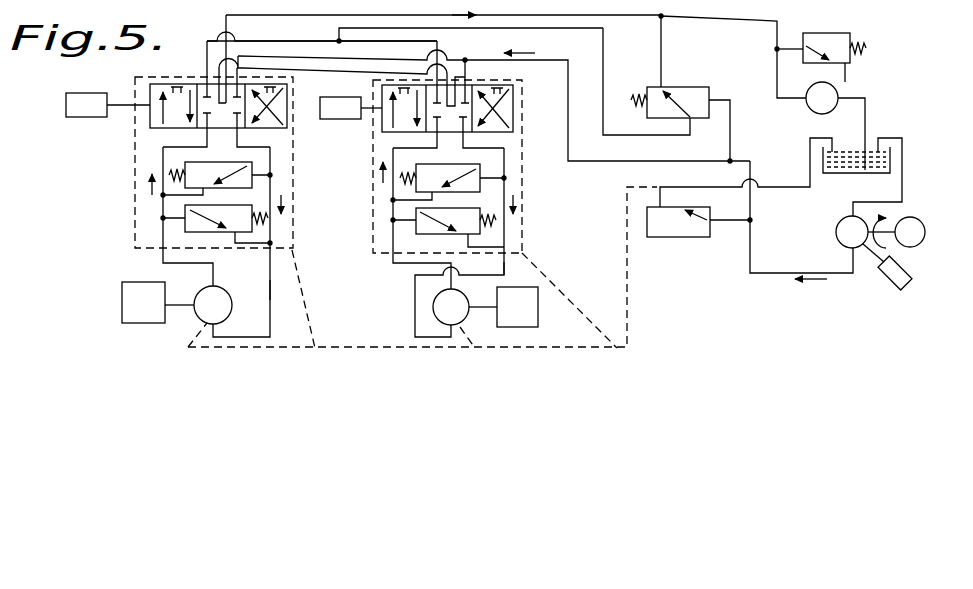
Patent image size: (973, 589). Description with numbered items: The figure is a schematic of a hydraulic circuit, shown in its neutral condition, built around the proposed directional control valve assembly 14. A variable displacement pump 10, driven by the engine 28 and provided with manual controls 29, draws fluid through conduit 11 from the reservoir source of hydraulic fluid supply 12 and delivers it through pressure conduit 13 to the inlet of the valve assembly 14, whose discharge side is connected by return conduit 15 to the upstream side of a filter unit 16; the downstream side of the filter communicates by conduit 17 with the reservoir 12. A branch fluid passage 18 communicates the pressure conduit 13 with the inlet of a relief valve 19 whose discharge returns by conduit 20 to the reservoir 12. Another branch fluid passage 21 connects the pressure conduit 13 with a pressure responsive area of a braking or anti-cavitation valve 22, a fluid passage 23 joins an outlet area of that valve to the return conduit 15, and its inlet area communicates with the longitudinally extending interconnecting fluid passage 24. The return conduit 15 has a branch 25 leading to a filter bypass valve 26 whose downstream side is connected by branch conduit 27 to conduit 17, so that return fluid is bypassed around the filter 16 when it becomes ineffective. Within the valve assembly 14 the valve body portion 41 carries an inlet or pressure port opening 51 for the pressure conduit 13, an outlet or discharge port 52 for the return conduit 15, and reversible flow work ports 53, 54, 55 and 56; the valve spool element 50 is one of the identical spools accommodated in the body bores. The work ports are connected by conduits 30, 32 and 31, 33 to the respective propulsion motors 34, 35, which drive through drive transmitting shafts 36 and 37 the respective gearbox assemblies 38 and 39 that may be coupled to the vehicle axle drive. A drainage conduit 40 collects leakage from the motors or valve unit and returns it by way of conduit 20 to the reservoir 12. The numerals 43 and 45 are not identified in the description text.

The variable displacement pump 10 is at (840, 242).
The conduit 11 is at (906, 190).
The reservoir source of hydraulic fluid supply 12 is at (868, 176).
The pressure conduit 13 is at (797, 238).
The directional control valve assembly 14 is at (548, 202).
The return conduit 15 is at (666, 43).
The filter unit 16 is at (812, 110).
The conduit 17 is at (866, 118).
The branch fluid passage 18 is at (727, 226).
The relief valve 19 is at (659, 242).
The conduit 20 is at (773, 187).
The branch fluid passage 21 is at (723, 100).
The braking or anti-cavitation valve 22 is at (710, 79).
The fluid passage 23 is at (661, 55).
The interconnecting fluid passage 24 is at (622, 137).
The branch 25 is at (790, 43).
The filter bypass valve 26 is at (828, 33).
The branch conduit 27 is at (847, 78).
The engine 28 is at (925, 232).
The manual controls 29 is at (908, 268).
The conduit 30 is at (160, 257).
The conduit 31 is at (392, 258).
The conduit 32 is at (272, 281).
The conduit 33 is at (503, 268).
The propulsion motor 34 is at (232, 291).
The propulsion motor 35 is at (460, 289).
The drive transmitting shaft 36 is at (178, 303).
The drive transmitting shaft 37 is at (483, 310).
The gearbox assembly 38 is at (122, 305).
The gearbox assembly 39 is at (538, 318).
The drainage conduit 40 is at (355, 347).
The valve body portion 41 is at (443, 7).
The line 43 is at (634, 67).
The pressure line 45 is at (742, 6).
The valve spool element 50 is at (398, 20).
The inlet or pressure port opening 51 is at (264, 20).
The outlet or discharge port 52 is at (459, 20).
The work port 53 is at (198, 95).
The work port 54 is at (428, 97).
The work port 55 is at (251, 109).
The work port 56 is at (481, 107).